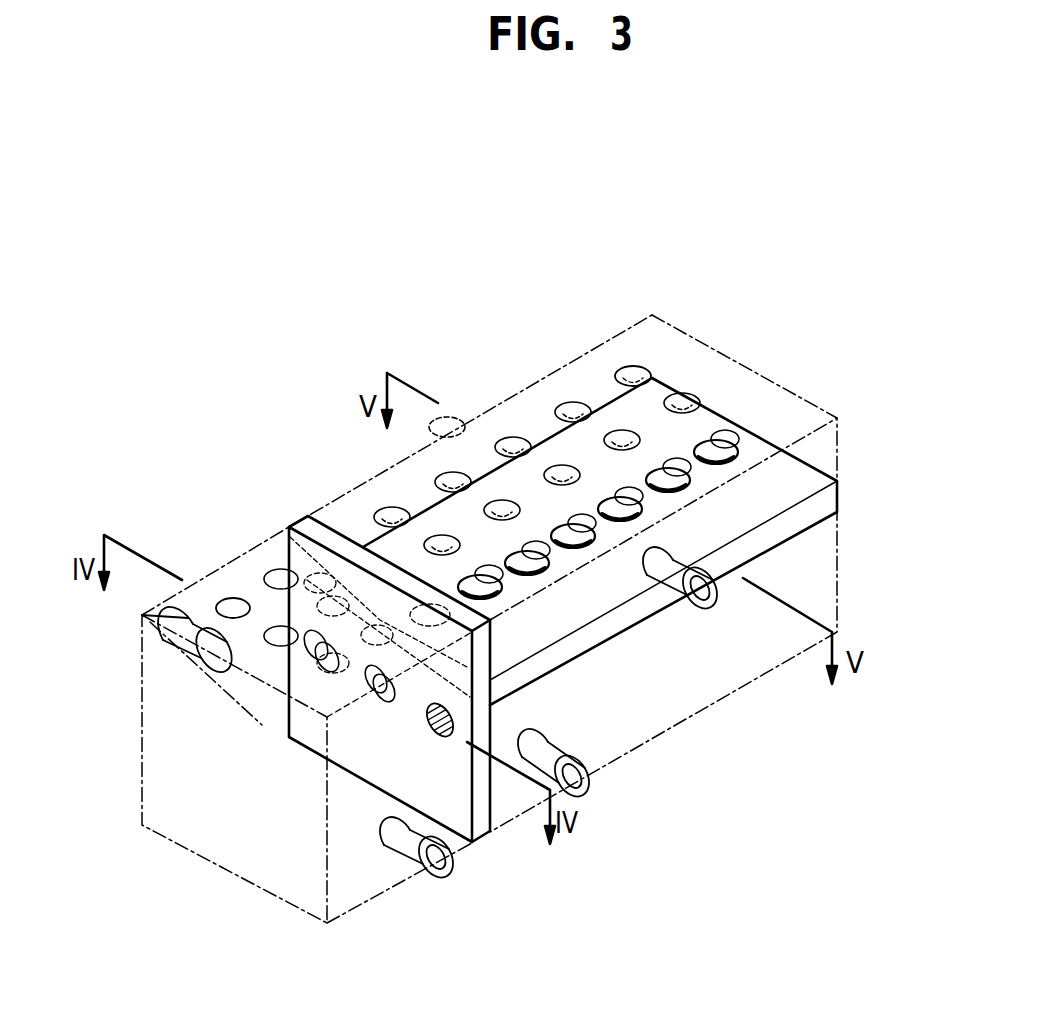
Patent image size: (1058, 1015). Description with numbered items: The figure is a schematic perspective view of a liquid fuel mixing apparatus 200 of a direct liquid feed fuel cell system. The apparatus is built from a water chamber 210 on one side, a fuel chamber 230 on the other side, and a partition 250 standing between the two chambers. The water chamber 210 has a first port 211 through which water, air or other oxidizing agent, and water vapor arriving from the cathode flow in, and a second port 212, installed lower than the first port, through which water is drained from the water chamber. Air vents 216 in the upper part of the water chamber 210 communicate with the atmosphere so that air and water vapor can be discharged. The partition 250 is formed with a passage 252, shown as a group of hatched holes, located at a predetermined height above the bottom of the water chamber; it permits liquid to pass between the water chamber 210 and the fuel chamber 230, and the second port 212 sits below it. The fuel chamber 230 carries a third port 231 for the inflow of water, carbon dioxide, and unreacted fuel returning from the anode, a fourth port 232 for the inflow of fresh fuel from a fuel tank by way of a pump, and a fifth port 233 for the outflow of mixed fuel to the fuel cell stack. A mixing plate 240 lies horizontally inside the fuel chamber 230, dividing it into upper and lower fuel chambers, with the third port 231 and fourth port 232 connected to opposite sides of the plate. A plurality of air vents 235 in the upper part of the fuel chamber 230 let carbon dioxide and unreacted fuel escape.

The liquid fuel mixing apparatus 200 is at (470, 350).
The water chamber 210 is at (357, 877).
The first port 211 is at (142, 615).
The second port 212 is at (447, 867).
The air vents 216 is at (233, 600).
The fuel chamber 230 is at (733, 643).
The third port 231 is at (462, 420).
The fourth port 232 is at (670, 598).
The fifth port 233 is at (596, 790).
The air vents 235 is at (633, 368).
The mixing plate 240 is at (820, 510).
The partition 250 is at (490, 820).
The passage 252 is at (440, 722).